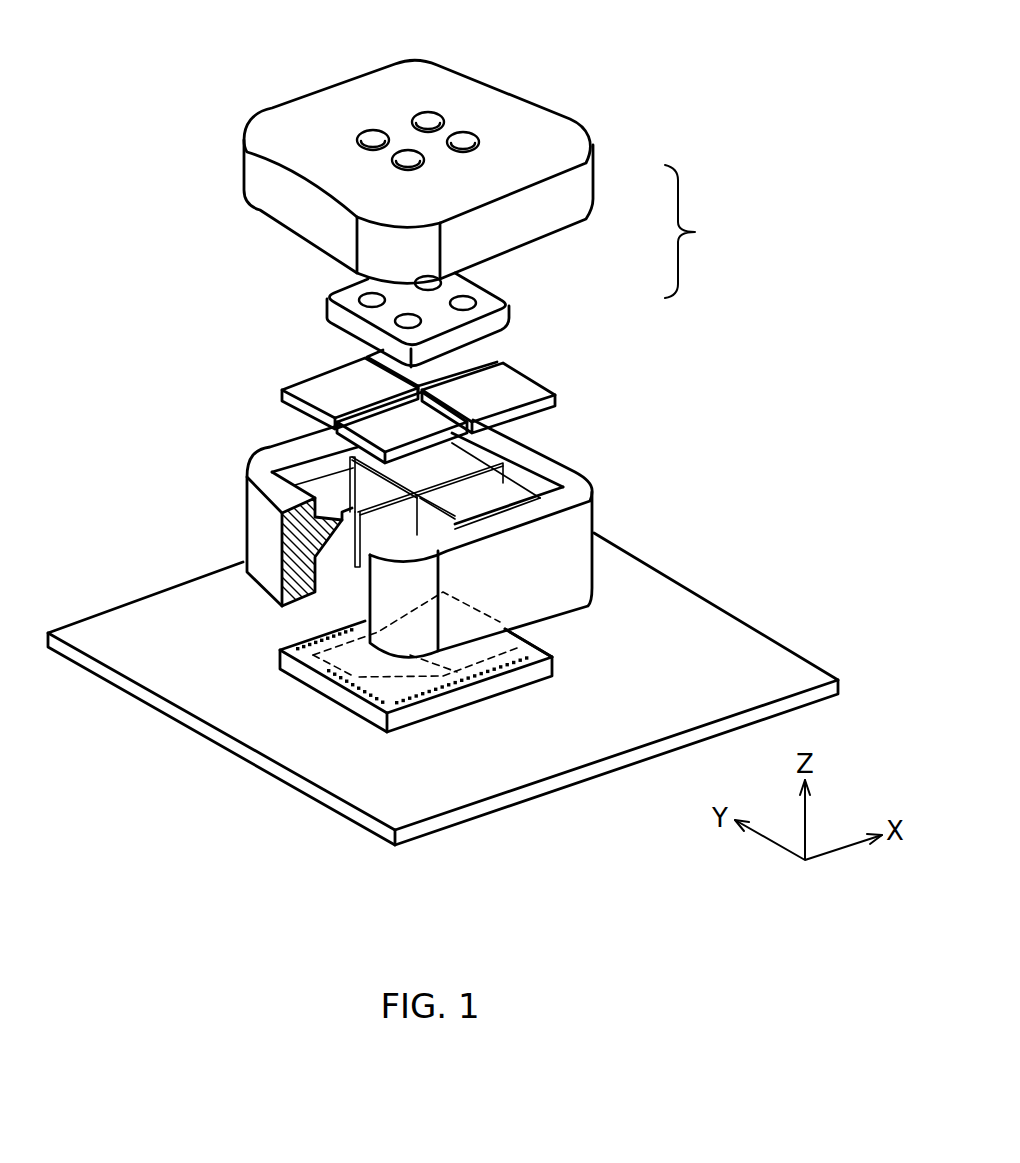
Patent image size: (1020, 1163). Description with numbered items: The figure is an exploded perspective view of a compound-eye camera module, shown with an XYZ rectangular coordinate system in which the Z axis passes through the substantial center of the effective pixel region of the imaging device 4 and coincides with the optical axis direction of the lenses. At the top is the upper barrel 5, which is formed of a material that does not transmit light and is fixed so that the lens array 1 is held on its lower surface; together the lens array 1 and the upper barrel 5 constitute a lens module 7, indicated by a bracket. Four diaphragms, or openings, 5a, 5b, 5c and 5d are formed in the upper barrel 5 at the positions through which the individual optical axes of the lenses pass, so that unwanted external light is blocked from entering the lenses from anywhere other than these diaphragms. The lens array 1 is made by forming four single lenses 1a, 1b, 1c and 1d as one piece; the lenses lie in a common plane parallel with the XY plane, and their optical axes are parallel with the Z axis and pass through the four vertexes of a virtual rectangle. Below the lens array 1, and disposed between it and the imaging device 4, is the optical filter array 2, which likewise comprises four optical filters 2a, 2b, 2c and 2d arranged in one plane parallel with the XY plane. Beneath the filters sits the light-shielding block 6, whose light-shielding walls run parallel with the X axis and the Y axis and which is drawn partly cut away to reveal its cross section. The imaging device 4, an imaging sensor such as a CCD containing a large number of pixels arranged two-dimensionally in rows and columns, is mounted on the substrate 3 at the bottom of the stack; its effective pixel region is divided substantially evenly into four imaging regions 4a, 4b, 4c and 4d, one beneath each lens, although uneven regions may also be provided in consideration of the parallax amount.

The lens array 1 is at (462, 305).
The lens 1a is at (442, 283).
The lens 1b is at (477, 304).
The lens 1c is at (358, 298).
The lens 1d is at (394, 321).
The optical filter array 2 is at (430, 394).
The optical filter 2a is at (478, 357).
The optical filter 2b is at (520, 382).
The optical filter 2c is at (325, 380).
The optical filter 2d is at (403, 413).
The substrate 3 is at (776, 641).
The imaging device 4 is at (362, 708).
The imaging region 4a is at (447, 630).
The imaging region 4b is at (527, 641).
The imaging region 4c is at (340, 655).
The imaging region 4d is at (430, 688).
The upper barrel 5 is at (409, 143).
The diaphragm 5a is at (417, 112).
The diaphragm 5b is at (466, 131).
The diaphragm 5c is at (365, 131).
The diaphragm 5d is at (392, 163).
The light-shielding block 6 is at (258, 524).
The lens module 7 is at (691, 231).